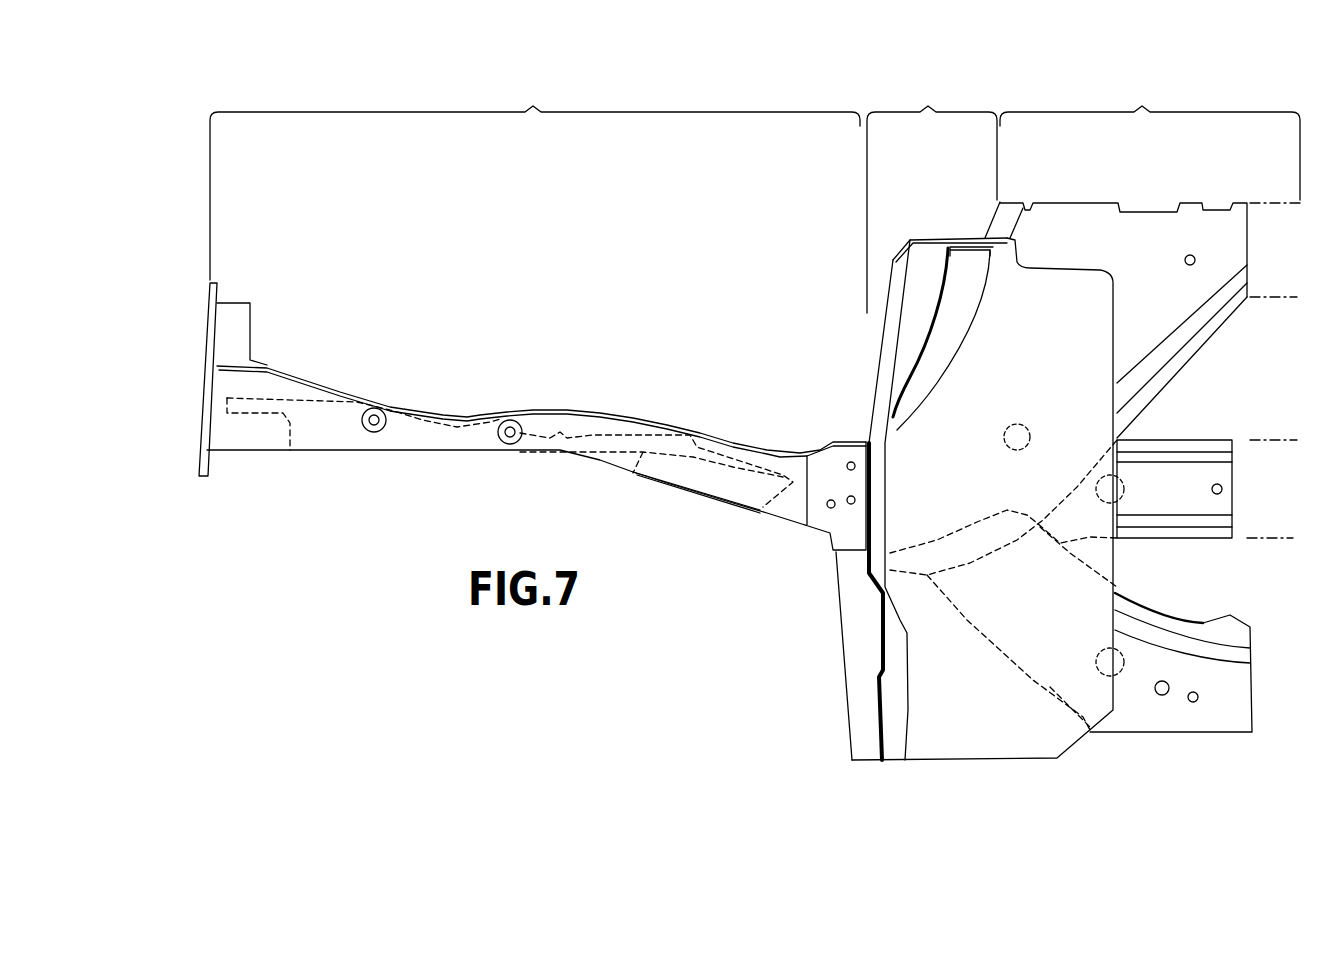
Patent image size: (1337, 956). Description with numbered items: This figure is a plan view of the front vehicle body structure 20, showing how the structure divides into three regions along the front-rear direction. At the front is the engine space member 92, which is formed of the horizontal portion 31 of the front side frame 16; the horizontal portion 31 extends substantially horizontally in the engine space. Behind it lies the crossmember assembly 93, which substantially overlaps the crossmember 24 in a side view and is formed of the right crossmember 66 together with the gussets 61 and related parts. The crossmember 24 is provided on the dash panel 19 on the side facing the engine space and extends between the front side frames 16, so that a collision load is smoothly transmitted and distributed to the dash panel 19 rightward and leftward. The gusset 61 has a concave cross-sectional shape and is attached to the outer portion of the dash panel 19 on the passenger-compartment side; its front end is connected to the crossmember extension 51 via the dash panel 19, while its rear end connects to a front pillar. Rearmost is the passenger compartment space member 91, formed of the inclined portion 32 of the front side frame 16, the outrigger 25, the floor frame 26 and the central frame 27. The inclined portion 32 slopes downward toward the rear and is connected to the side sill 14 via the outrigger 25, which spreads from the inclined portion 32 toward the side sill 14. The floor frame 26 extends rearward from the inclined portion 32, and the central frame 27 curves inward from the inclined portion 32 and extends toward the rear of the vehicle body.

The front vehicle body structure 20 is at (233, 70).
The engine space member 92 is at (535, 179).
The crossmember assembly 93 is at (932, 195).
The passenger compartment space member 91 is at (1150, 139).
The front side frame 16 is at (498, 395).
The horizontal portion 31 is at (548, 410).
The crossmember extension 51 is at (820, 475).
The crossmember 24 is at (845, 640).
The right crossmember 66 is at (868, 672).
The gusset 61 is at (973, 267).
The dash panel 19 is at (985, 743).
The outrigger 25 is at (1090, 213).
The side sill 14 is at (1287, 297).
The inclined portion 32 is at (1177, 438).
The floor frame 26 is at (1277, 538).
The central frame 27 is at (1197, 732).